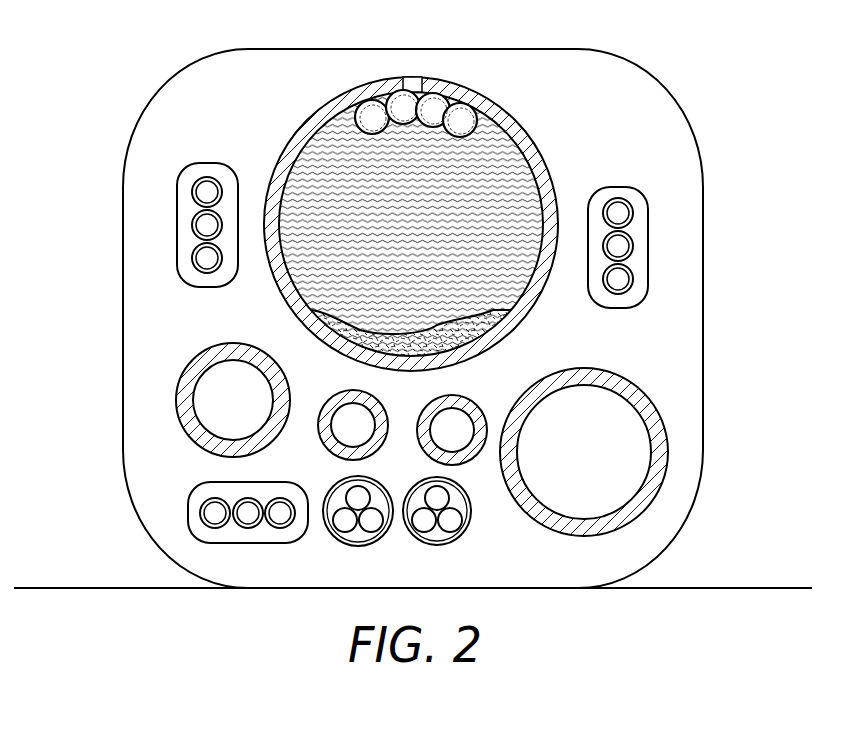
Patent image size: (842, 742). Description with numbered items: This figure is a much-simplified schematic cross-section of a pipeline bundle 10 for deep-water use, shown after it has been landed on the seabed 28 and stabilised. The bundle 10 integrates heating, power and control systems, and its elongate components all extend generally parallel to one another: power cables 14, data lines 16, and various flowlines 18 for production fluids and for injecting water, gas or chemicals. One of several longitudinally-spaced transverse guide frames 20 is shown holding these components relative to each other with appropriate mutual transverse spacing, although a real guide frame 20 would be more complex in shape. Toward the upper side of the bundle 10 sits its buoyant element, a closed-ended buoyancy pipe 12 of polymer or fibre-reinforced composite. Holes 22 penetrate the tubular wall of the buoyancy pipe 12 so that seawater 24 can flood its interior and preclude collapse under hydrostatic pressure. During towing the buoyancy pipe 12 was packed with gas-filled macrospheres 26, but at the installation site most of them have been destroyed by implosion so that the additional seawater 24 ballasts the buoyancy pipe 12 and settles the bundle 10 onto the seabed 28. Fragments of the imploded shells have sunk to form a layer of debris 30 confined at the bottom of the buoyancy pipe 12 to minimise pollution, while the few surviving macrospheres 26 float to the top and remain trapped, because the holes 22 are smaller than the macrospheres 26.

The pipeline bundle 10 is at (414, 300).
The buoyancy pipe 12 is at (510, 125).
The power cables 14 is at (327, 528).
The data lines 16 is at (207, 165).
The flowlines 18 is at (202, 358).
The guide frame 20 is at (673, 117).
The holes 22 is at (411, 77).
The seawater 24 is at (510, 275).
The macrospheres 26 is at (373, 124).
The seabed 28 is at (62, 588).
The debris 30 is at (403, 347).